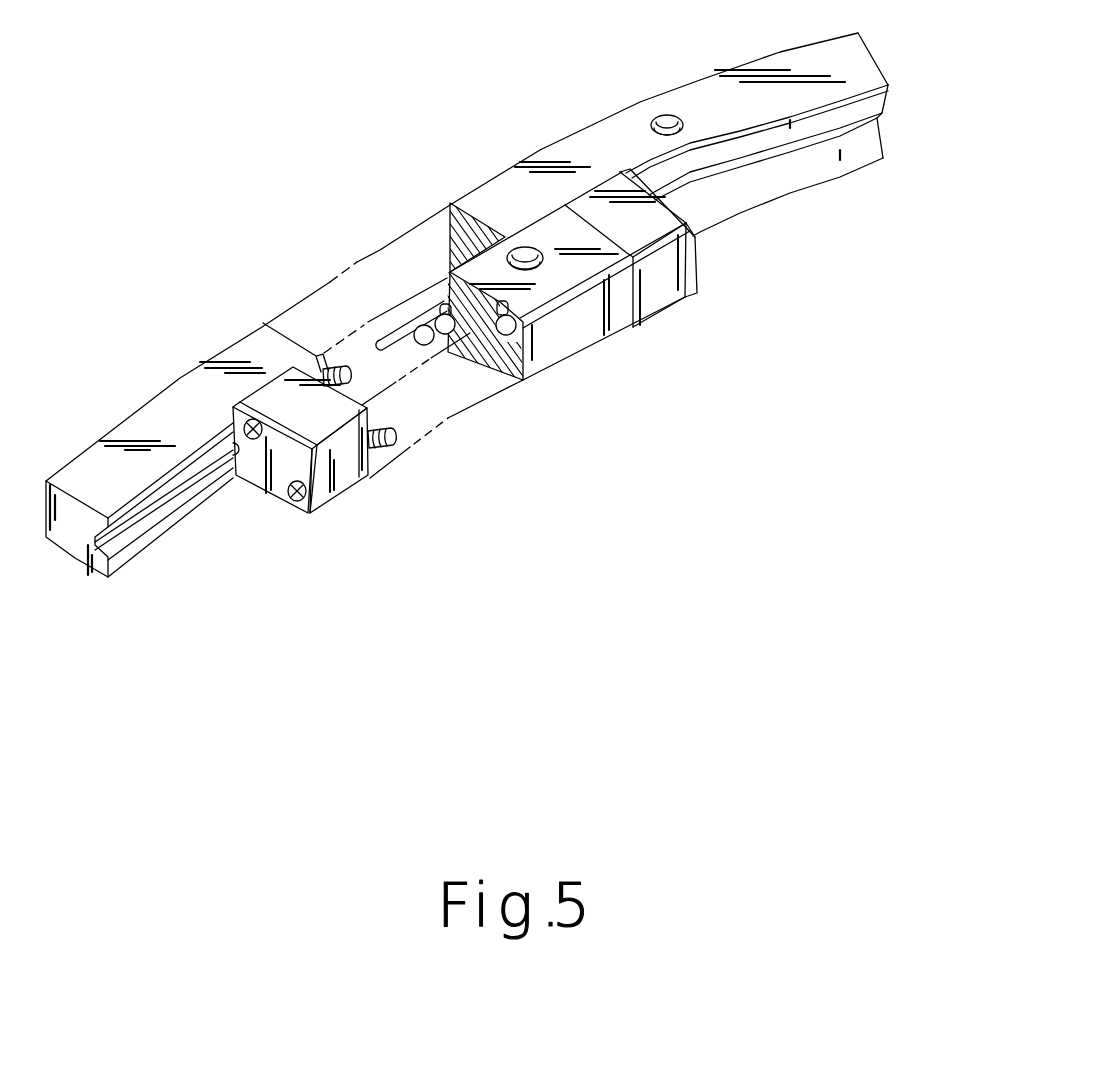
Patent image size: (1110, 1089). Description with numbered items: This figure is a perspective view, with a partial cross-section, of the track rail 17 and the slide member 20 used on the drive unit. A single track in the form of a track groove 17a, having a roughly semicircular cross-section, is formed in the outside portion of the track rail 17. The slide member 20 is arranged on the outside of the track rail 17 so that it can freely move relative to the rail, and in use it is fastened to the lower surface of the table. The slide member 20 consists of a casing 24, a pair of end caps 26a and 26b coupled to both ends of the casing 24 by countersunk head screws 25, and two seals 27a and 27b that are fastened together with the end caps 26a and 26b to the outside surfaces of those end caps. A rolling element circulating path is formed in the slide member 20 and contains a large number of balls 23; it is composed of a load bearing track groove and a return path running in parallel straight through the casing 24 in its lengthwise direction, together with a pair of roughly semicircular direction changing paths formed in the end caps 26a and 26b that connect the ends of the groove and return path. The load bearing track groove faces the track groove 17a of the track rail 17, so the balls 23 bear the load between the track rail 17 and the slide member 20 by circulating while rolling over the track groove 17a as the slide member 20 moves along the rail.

The track rail 17 is at (151, 365).
The track groove 17a is at (122, 525).
The slide member 20 is at (522, 391).
The balls 23 is at (452, 335).
The casing 24 is at (575, 335).
The countersunk head screws 25 is at (248, 482).
The end cap 26a is at (347, 472).
The end cap 26b is at (667, 287).
The seal 27a is at (312, 507).
The seal 27b is at (699, 255).